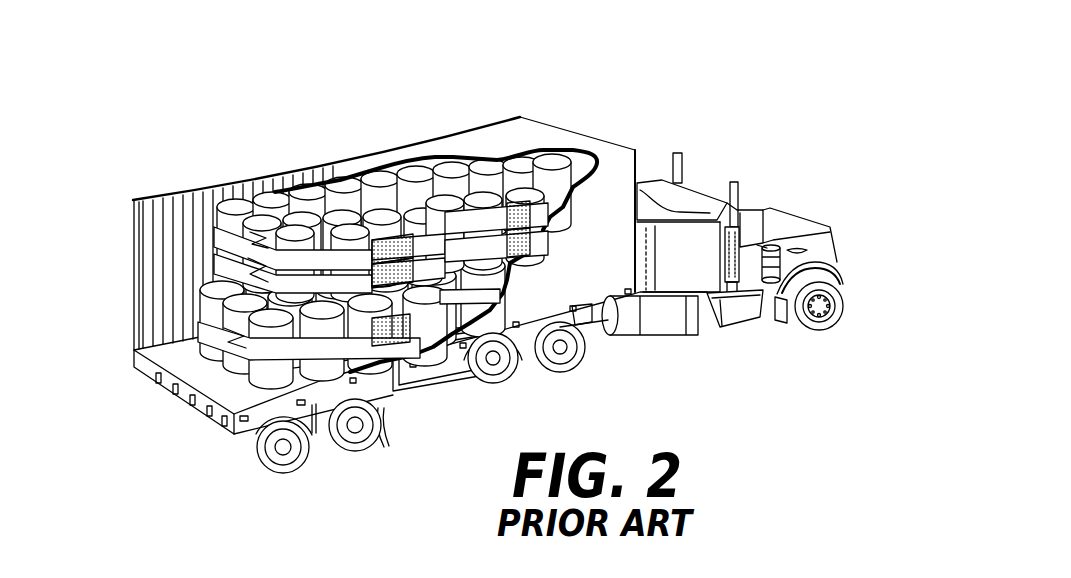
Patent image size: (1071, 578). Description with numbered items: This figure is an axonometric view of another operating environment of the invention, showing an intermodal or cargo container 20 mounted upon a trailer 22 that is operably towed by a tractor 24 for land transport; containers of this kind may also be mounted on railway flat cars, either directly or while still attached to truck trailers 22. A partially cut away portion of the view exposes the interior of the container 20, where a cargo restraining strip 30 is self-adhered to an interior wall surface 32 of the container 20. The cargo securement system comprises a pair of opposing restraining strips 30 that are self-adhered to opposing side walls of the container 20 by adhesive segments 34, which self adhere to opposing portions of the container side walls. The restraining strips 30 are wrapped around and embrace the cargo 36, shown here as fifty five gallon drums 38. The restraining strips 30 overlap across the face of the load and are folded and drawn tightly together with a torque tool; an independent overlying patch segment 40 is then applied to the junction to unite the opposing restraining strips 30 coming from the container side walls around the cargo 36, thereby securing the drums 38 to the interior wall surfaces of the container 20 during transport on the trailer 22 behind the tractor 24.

The intermodal cargo container 20 is at (570, 127).
The trailer 22 is at (141, 367).
The tractor 24 is at (842, 241).
The cargo restraining strip 30 is at (380, 412).
The interior wall surface 32 is at (220, 234).
The adhesive segments 34 is at (547, 221).
The cargo 36 is at (240, 384).
The fifty five gallon drums 38 is at (311, 190).
The overlying patch segment 40 is at (250, 233).